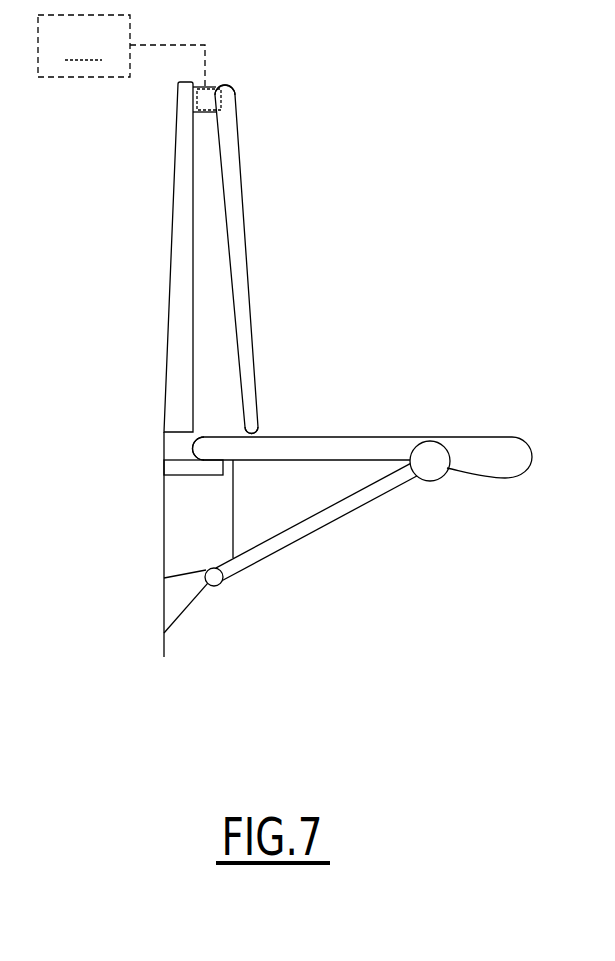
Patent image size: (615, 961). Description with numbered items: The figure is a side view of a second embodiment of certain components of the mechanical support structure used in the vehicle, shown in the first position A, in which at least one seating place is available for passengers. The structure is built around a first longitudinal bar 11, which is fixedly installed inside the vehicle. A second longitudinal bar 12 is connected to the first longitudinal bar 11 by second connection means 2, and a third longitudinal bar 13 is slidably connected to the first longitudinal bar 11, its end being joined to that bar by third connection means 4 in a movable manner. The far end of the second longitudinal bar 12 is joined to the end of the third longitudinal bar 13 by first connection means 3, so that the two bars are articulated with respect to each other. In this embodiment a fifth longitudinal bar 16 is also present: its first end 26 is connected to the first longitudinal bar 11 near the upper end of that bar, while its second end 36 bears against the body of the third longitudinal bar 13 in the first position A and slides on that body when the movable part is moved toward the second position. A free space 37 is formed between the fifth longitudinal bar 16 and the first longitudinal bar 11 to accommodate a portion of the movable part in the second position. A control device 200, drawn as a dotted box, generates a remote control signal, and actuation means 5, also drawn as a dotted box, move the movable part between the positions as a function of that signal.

The control device 200 is at (121, 51).
The actuation means 5 is at (213, 86).
The first end of the fifth longitudinal bar 26 is at (253, 88).
The fifth longitudinal bar 16 is at (237, 227).
The free space 37 is at (188, 254).
The first longitudinal bar 11 is at (178, 353).
The second end of the fifth longitudinal bar 36 is at (252, 420).
The third connection means 4 is at (203, 448).
The third longitudinal bar 13 is at (333, 447).
The first connection means 3 is at (430, 461).
The second longitudinal bar 12 is at (350, 510).
The second connection means 2 is at (218, 580).
The first position A is at (450, 362).